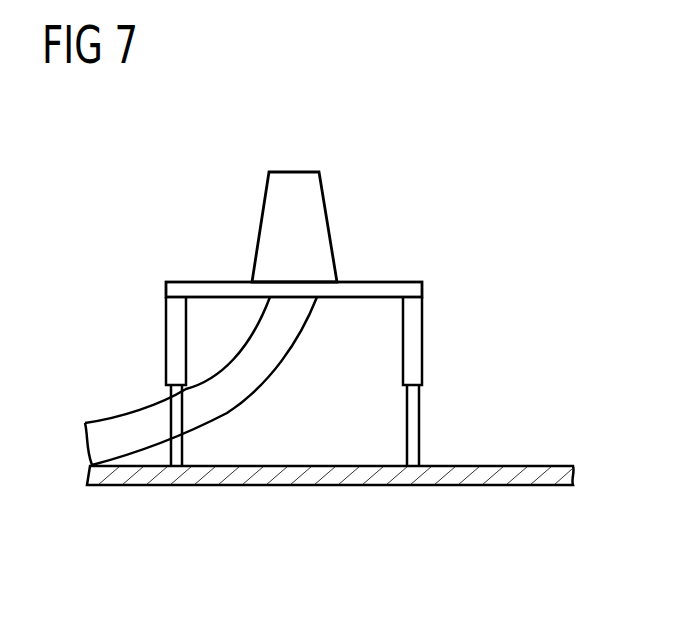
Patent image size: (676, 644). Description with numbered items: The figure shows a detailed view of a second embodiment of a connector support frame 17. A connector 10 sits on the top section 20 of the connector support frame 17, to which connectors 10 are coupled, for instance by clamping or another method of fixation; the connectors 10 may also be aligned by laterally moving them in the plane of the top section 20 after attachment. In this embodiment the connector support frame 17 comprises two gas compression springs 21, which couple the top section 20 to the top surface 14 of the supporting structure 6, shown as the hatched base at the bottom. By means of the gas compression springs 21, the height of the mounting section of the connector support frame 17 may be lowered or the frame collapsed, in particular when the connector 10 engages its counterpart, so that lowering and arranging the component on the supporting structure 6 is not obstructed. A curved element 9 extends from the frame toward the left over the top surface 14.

The supporting structure 6 is at (330, 431).
The blade 9 is at (125, 435).
The connector 10 is at (293, 185).
The top surface 14 is at (480, 465).
The connector support frame 17 is at (298, 334).
The top section 20 is at (383, 290).
The gas compression springs 21 is at (173, 318).